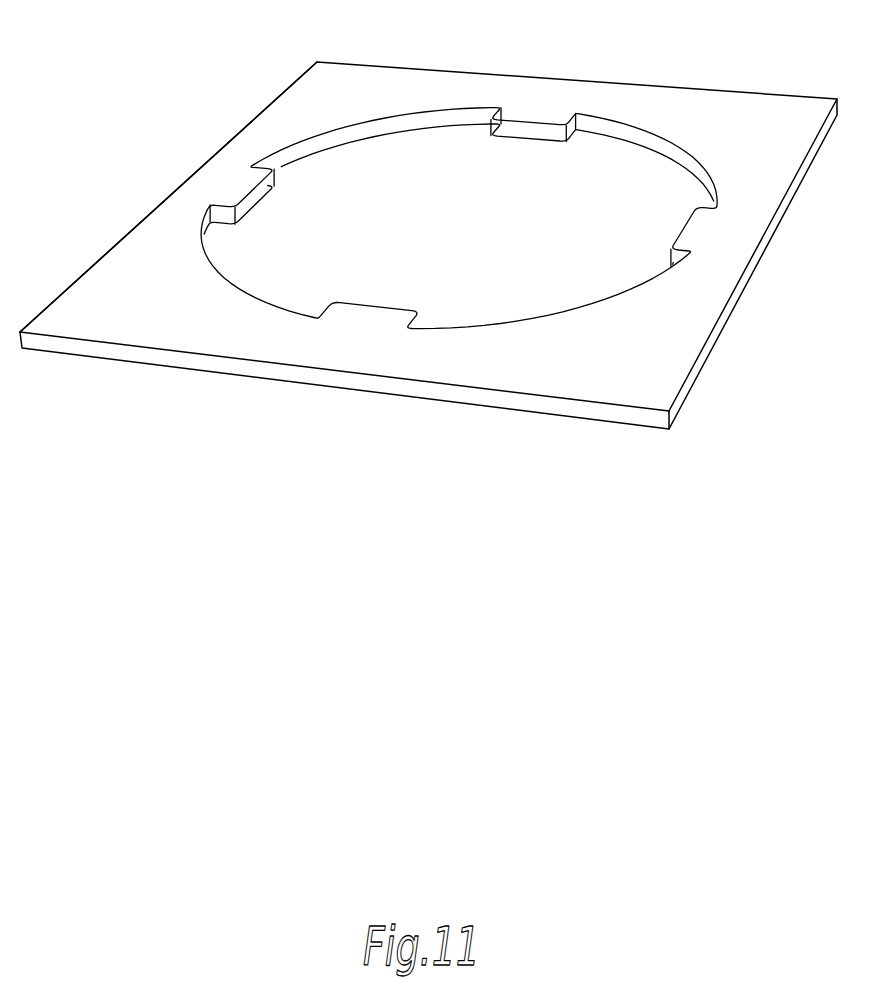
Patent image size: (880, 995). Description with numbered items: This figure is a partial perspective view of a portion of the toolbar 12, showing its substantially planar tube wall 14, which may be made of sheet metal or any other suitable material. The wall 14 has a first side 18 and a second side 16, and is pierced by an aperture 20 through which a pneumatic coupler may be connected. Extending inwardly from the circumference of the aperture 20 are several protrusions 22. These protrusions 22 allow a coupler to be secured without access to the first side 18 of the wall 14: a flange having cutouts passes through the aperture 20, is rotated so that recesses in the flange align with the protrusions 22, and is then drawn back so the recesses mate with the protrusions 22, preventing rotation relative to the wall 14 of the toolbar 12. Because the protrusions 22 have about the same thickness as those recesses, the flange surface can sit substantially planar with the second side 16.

The toolbar 12 is at (428, 219).
The tube wall 14 is at (765, 110).
The second side 16 is at (117, 272).
The first side 18 is at (180, 370).
The aperture 20 is at (352, 192).
The protrusion 22 is at (245, 183).